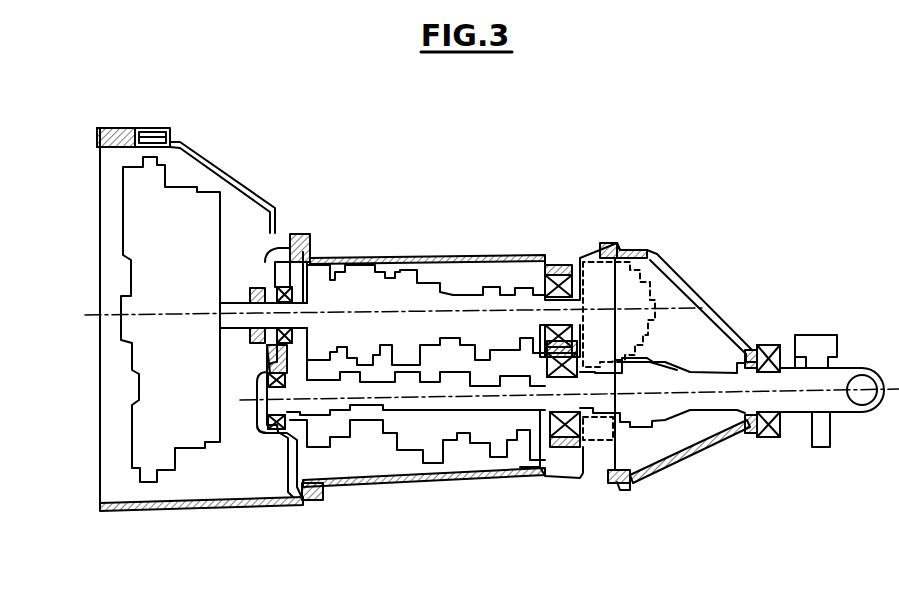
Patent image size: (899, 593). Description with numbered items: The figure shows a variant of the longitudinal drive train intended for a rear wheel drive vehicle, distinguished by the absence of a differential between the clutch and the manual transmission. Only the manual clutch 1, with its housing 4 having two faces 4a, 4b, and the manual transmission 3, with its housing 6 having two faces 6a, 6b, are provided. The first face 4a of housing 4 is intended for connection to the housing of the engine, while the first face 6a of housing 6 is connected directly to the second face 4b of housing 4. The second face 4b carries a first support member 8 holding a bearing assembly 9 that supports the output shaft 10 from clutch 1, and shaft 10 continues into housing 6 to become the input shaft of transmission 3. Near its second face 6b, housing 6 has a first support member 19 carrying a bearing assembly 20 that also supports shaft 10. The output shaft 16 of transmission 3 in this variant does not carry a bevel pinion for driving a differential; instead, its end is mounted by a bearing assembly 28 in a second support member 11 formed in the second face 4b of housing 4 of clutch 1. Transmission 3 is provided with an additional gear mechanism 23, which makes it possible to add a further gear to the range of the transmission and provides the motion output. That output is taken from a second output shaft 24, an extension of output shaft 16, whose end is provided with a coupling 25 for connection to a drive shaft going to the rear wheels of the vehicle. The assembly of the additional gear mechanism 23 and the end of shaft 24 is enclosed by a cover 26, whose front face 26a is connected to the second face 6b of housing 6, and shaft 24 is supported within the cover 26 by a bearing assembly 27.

The manual clutch 1 is at (226, 216).
The manual transmission 3 is at (463, 280).
The housing 4 is at (222, 185).
The first face 4a is at (97, 134).
The second face 4b is at (318, 244).
The housing 6 is at (436, 256).
The first face 6a is at (293, 503).
The second face 6b is at (627, 247).
The first support member 8 is at (283, 275).
The bearing assembly 9 is at (307, 278).
The output shaft 10 is at (401, 311).
The second support member 11 is at (263, 434).
The output shaft 16 is at (478, 397).
The first support member 19 is at (548, 266).
The bearing assembly 20 is at (550, 262).
The additional gear mechanism 23 is at (668, 323).
The second output shaft 24 is at (697, 385).
The coupling 25 is at (838, 377).
The cover 26 is at (688, 286).
The front face 26a is at (613, 473).
The bearing assembly 27 is at (771, 348).
The bearing assembly 28 is at (274, 433).